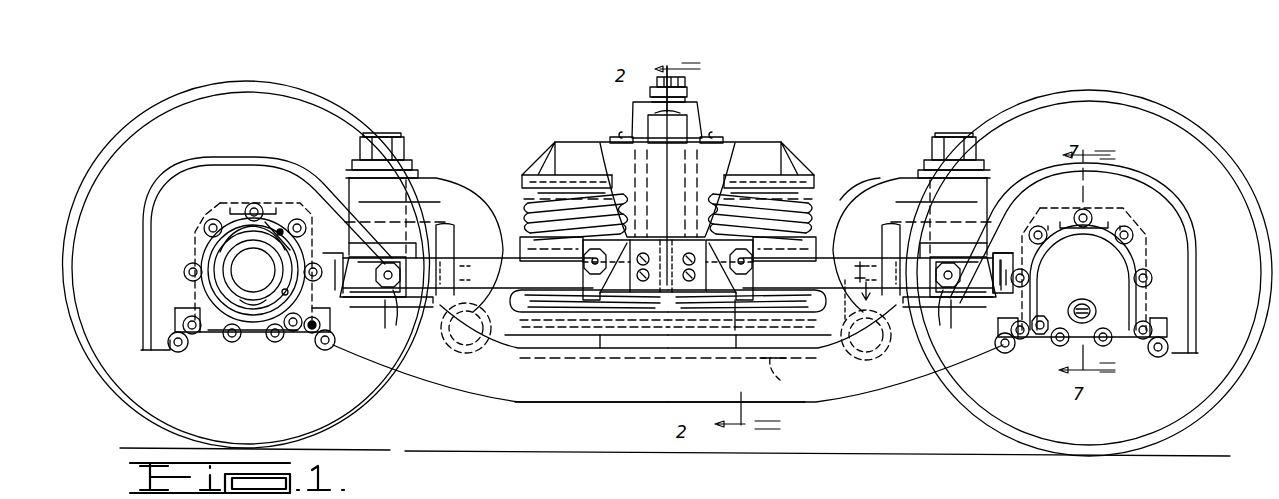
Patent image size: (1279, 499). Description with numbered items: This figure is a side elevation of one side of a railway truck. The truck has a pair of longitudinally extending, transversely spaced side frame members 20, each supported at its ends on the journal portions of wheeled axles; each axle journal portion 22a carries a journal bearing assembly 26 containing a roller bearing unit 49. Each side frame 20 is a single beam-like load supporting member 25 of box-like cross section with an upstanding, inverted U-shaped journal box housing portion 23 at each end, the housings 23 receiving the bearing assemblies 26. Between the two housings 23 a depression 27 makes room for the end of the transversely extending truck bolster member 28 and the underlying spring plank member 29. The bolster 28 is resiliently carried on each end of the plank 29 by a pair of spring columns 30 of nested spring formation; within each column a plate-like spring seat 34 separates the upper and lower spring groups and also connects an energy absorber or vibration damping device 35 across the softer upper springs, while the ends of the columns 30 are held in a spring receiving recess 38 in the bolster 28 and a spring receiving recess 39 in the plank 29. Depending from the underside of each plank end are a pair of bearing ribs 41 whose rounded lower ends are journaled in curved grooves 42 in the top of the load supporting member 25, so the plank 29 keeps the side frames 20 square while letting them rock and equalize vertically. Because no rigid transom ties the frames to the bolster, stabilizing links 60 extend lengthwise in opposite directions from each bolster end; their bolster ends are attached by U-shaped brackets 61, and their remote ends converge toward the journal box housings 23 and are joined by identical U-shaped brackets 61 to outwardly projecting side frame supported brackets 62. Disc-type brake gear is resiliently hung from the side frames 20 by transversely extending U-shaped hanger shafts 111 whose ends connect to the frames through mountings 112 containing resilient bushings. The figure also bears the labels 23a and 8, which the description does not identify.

The side frame member 20 is at (1177, 184).
The axle journal portion 22a is at (220, 262).
The journal box housing portion 23 is at (150, 300).
The lower spring member 23a is at (638, 295).
The load supporting member 25 is at (600, 402).
The journal bearing assembly 26 is at (220, 318).
The depression 27 is at (832, 230).
The truck bolster member 28 is at (750, 160).
The spring plank member 29 is at (680, 325).
The spring column 30 is at (522, 200).
The spring seat 34 is at (872, 256).
The vibration damping device 35 is at (680, 127).
The spring receiving recess 38 is at (548, 162).
The spring receiving recess 39 is at (843, 352).
The bearing rib 41 is at (745, 345).
The groove 42 is at (776, 360).
The roller bearing unit 49 is at (256, 305).
The stabilizing link 60 is at (490, 243).
The U-shaped bracket 61 is at (405, 298).
The side frame supported bracket 62 is at (355, 300).
The hanger shaft 111 is at (450, 185).
The mounting 112 is at (405, 172).
The bolt 8 is at (868, 310).